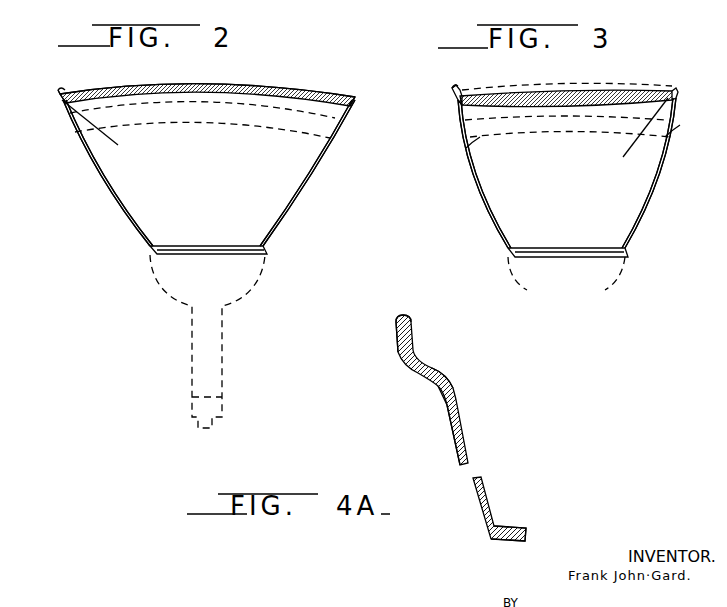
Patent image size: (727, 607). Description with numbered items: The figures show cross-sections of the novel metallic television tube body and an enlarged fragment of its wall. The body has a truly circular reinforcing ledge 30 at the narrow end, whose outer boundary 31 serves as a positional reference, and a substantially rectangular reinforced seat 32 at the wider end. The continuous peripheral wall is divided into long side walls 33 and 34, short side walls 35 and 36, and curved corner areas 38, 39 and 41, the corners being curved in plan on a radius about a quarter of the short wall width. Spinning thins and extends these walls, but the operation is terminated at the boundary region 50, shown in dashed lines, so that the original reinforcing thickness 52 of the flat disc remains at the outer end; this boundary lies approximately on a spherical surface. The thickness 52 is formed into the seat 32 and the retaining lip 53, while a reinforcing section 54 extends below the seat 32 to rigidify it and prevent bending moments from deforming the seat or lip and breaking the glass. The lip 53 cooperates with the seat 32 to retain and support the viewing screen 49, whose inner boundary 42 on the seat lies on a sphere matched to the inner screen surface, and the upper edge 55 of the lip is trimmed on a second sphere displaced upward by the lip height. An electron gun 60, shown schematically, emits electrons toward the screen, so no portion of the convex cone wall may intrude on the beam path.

In FIG. 2, the reinforcing ledge 30 is at (262, 252).
In FIG. 3, the reinforcing ledge 30 is at (622, 257).
In FIG. 4A, the reinforcing ledge 30 is at (508, 542).
In FIG. 4A, the outer boundary of seating surface 31 is at (492, 537).
In FIG. 2, the seat 32 is at (68, 97).
In FIG. 3, the seat 32 is at (678, 98).
In FIG. 4A, the seat 32 is at (437, 373).
In FIG. 2, the long side wall 33 is at (215, 162).
In FIG. 3, the long side wall 33 is at (657, 188).
In FIG. 3, the long side wall 34 is at (481, 191).
In FIG. 2, the short side wall 35 is at (315, 180).
In FIG. 2, the short side wall 36 is at (98, 182).
In FIG. 3, the short side wall 36 is at (585, 176).
In FIG. 2, the corner area 38 is at (103, 155).
In FIG. 3, the corner area 38 is at (653, 151).
In FIG. 3, the corner area 39 is at (490, 155).
In FIG. 2, the corner area 41 is at (315, 152).
In FIG. 2, the inner boundary of seating surface 42 is at (98, 126).
In FIG. 3, the inner boundary of seating surface 42 is at (640, 136).
In FIG. 4A, the inner boundary of seating surface 42 is at (452, 378).
In FIG. 2, the viewing screen 49 is at (287, 97).
In FIG. 2, the boundary region 50 is at (262, 108).
In FIG. 3, the boundary region 50 is at (463, 112).
In FIG. 4A, the boundary region 50 is at (453, 423).
In FIG. 2, the reinforcing thickness 52 is at (360, 93).
In FIG. 2, the retaining lip 53 is at (58, 95).
In FIG. 3, the retaining lip 53 is at (454, 90).
In FIG. 4A, the retaining lip 53 is at (399, 349).
In FIG. 2, the reinforcing section 54 is at (67, 107).
In FIG. 3, the reinforcing section 54 is at (458, 104).
In FIG. 4A, the reinforcing section 54 is at (443, 398).
In FIG. 2, the upper edge of lip 55 is at (61, 93).
In FIG. 3, the upper edge of lip 55 is at (455, 92).
In FIG. 4A, the upper edge of lip 55 is at (404, 315).
In FIG. 2, the electron gun 60 is at (247, 278).
In FIG. 3, the electron gun 60 is at (612, 284).